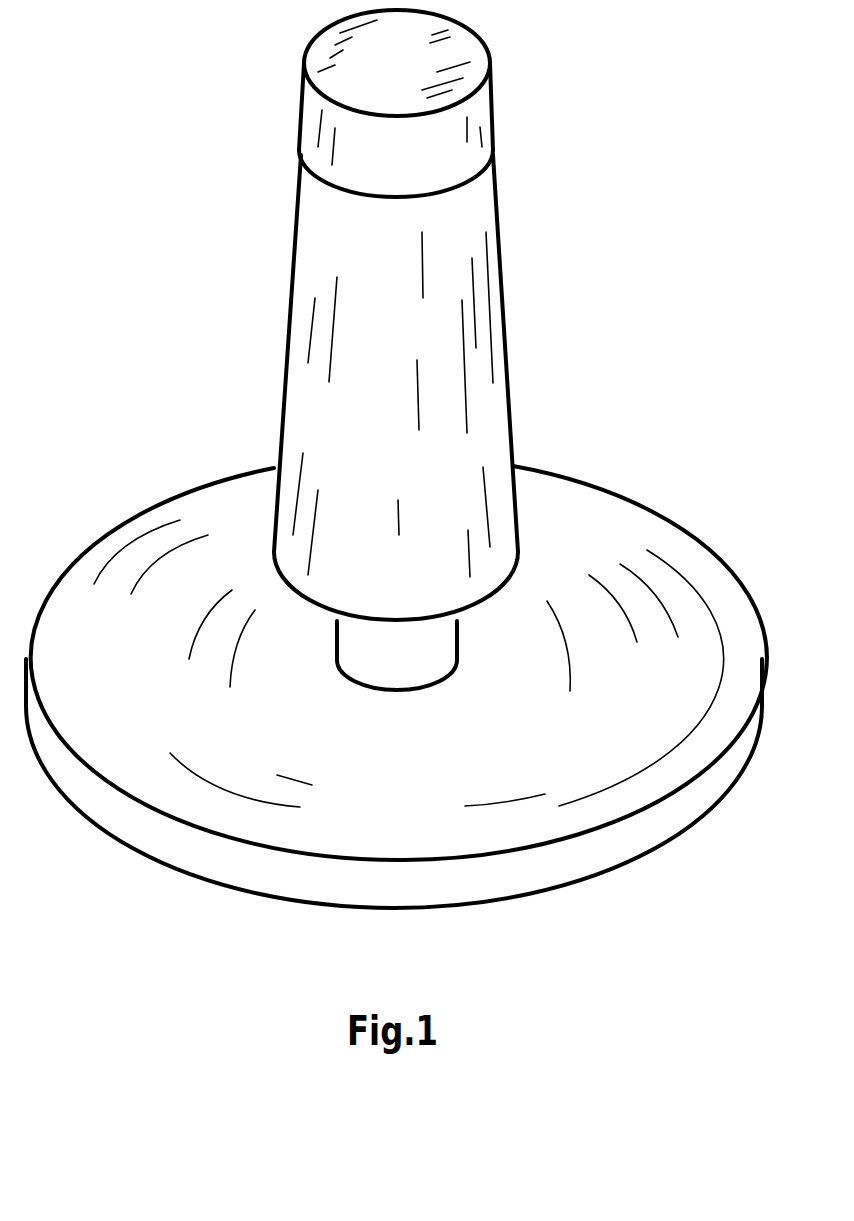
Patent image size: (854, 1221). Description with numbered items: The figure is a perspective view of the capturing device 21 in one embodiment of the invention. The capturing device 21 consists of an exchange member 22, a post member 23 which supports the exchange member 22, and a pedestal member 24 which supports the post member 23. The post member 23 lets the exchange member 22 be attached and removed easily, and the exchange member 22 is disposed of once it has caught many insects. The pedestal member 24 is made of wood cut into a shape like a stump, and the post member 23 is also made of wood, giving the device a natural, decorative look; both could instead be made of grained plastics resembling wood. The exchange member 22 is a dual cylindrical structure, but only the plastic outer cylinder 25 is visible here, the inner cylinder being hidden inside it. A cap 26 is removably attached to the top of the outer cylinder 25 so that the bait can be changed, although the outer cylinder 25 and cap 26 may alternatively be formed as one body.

The capturing device 21 is at (548, 196).
The exchange member 22 is at (298, 297).
The post member 23 is at (346, 649).
The pedestal member 24 is at (647, 523).
The outer cylinder 25 is at (393, 404).
The cap 26 is at (483, 114).